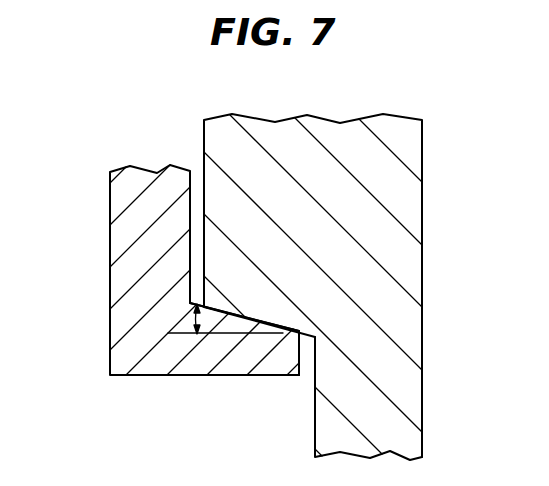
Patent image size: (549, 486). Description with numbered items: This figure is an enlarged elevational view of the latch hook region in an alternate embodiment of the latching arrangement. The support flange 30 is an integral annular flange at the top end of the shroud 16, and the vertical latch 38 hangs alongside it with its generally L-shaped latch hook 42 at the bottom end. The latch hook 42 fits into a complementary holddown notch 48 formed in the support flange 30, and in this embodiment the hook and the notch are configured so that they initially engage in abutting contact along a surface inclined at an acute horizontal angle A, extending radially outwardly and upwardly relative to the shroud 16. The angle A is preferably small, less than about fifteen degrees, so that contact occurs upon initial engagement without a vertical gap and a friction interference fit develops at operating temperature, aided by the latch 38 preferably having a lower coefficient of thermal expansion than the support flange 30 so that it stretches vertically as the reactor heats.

The support flange 30 is at (422, 173).
The latch 38 is at (92, 232).
The latch hook 42 is at (220, 376).
The holddown notch 48 is at (308, 336).
The shroud 16 is at (450, 383).
The acute horizontal angle A is at (197, 306).